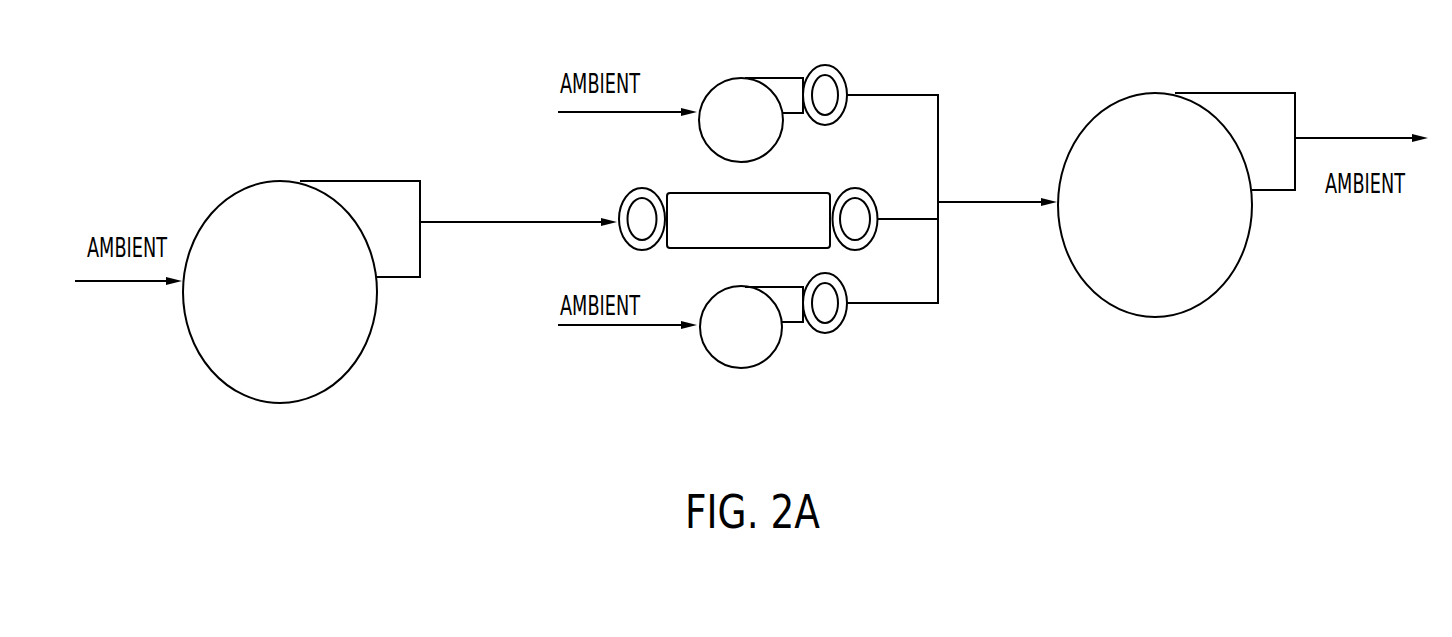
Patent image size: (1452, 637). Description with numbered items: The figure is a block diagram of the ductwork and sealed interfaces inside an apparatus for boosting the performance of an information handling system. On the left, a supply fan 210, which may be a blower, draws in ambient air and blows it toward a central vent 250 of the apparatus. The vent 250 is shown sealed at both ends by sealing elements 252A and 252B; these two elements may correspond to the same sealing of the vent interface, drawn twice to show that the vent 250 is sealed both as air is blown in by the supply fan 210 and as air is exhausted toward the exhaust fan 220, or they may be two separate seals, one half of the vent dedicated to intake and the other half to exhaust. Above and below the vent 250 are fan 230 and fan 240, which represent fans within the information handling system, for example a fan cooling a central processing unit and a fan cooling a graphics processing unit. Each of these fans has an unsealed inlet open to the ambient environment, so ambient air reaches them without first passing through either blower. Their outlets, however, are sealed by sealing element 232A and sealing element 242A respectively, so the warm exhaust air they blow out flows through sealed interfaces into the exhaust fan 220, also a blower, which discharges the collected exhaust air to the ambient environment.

The supply fan 210 is at (315, 398).
The exhaust fan 220 is at (1170, 317).
The fan 230 is at (720, 82).
The sealing element 232A is at (833, 65).
The fan 240 is at (722, 363).
The sealing element 242A is at (827, 332).
The central vent 250 is at (693, 192).
The sealing element 252A is at (620, 203).
The sealing element 252B is at (868, 203).